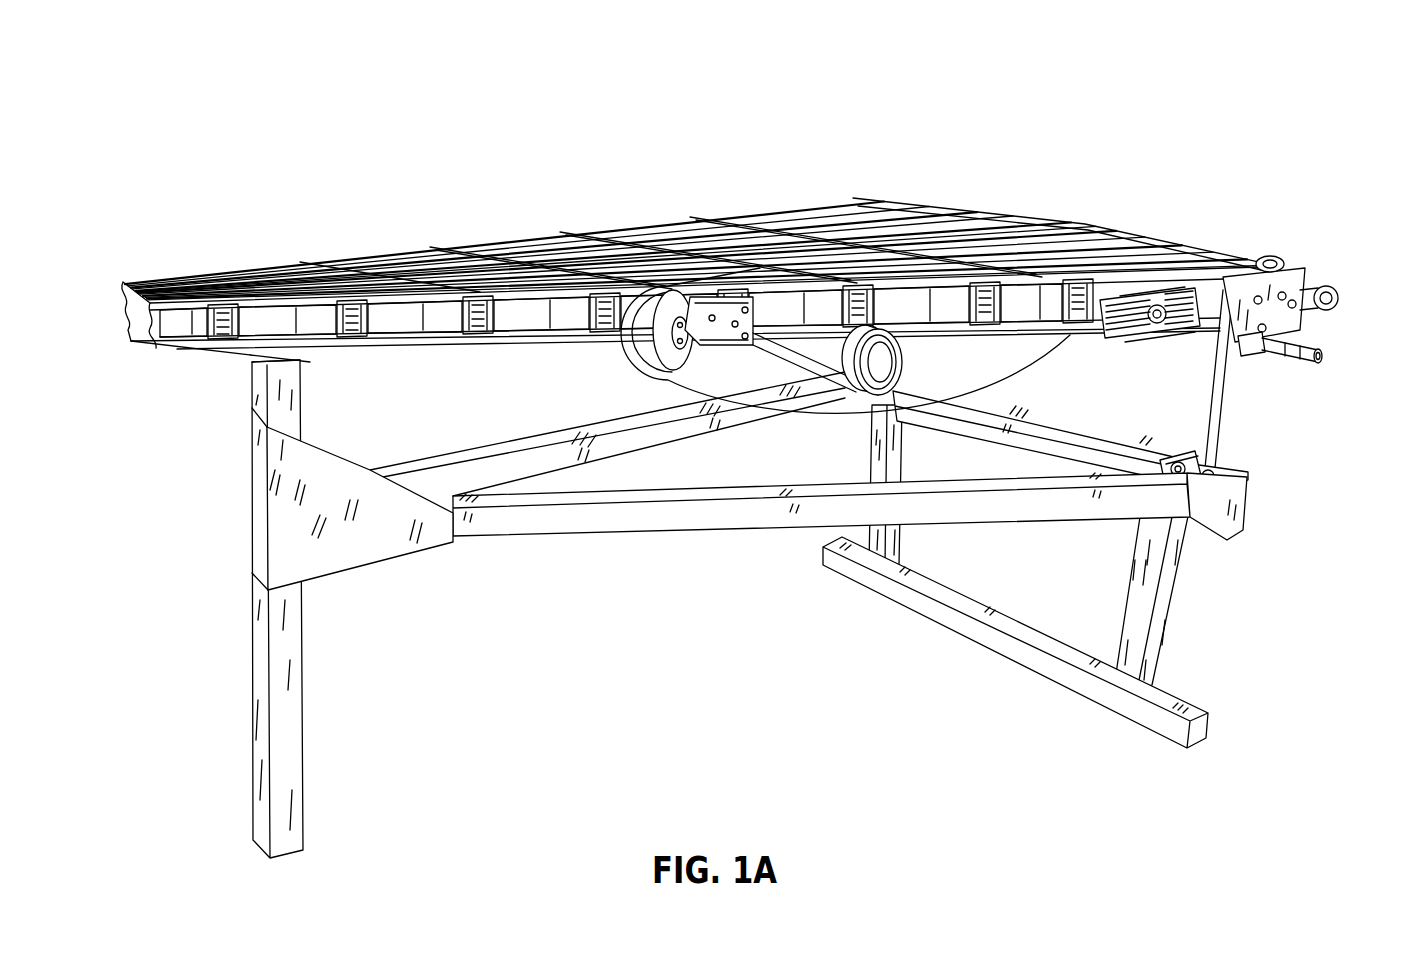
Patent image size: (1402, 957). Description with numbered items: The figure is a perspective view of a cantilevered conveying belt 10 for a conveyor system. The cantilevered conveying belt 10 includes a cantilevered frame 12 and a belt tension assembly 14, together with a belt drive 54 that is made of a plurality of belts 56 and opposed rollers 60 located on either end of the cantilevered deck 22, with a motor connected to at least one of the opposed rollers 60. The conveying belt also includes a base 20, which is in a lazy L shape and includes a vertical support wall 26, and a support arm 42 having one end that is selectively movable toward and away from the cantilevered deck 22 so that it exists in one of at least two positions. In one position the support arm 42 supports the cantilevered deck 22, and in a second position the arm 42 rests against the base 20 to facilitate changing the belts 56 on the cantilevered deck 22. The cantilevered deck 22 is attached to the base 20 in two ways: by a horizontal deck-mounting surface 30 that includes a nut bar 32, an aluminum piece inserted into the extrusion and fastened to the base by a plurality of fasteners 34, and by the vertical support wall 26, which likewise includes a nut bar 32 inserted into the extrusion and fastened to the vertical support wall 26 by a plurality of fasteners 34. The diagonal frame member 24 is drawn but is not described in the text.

The cantilevered conveying belt 10 is at (249, 117).
The cantilevered frame 12 is at (201, 492).
The belt tension assembly 14 is at (735, 380).
The base 20 is at (480, 530).
The cantilevered deck 22 is at (751, 290).
The rear diagonal beam 24 is at (1005, 410).
The vertical support wall 26 is at (733, 378).
The horizontal deck-mounting surface 30 is at (1150, 350).
The nut bar 32 is at (1163, 322).
The fasteners 34 is at (1306, 270).
The support arm 42 is at (1277, 331).
The belt drive 54 is at (712, 342).
The belts 56 is at (640, 337).
The opposed rollers 60 is at (1263, 262).